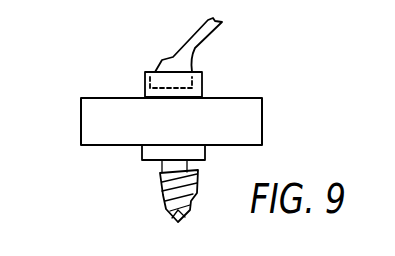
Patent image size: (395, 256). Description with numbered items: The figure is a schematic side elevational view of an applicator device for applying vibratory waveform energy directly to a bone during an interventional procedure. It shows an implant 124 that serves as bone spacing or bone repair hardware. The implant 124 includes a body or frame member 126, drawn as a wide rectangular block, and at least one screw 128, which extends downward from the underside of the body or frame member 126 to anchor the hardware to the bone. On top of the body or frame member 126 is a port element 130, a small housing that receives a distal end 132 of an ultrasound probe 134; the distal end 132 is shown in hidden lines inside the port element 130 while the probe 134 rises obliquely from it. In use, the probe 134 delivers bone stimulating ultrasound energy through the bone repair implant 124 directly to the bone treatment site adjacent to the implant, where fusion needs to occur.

The implant 124 is at (78, 124).
The body or frame member 126 is at (110, 138).
The screw 128 is at (161, 198).
The port element 130 is at (203, 88).
The distal end 132 is at (147, 86).
The ultrasound probe 134 is at (200, 43).